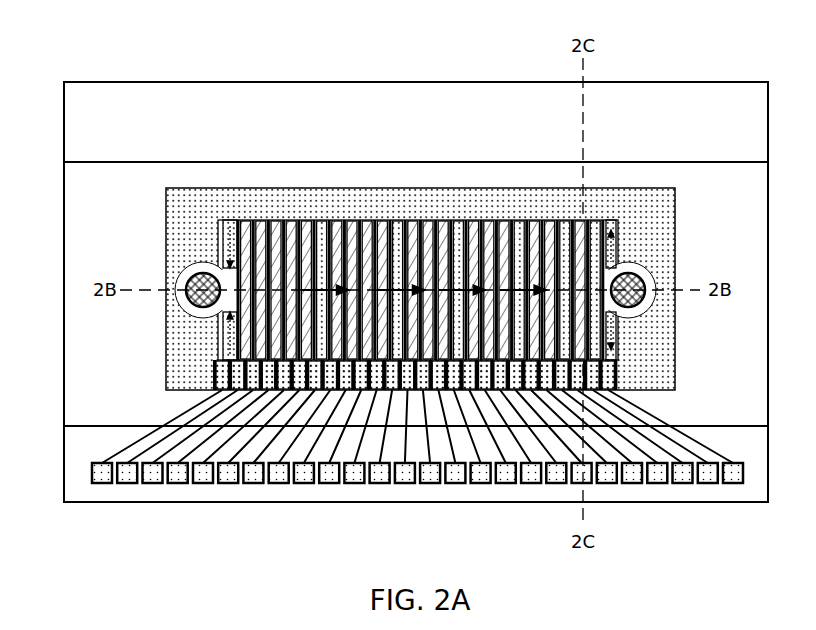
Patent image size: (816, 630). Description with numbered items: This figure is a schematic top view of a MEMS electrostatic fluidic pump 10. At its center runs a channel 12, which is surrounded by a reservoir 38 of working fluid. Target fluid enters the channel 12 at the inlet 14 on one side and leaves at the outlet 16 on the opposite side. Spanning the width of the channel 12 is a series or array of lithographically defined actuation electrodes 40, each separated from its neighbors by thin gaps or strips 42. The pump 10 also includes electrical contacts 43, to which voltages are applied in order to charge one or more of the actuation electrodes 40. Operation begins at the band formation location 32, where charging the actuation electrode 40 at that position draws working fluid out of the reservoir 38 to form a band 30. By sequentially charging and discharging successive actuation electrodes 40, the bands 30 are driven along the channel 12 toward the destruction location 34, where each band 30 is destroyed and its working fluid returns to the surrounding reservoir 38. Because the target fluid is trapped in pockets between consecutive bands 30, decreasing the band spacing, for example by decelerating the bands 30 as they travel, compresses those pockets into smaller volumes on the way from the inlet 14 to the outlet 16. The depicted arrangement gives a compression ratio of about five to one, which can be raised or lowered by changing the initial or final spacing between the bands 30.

The pump 10 is at (696, 41).
The channel 12 is at (245, 345).
The inlet 14 is at (194, 277).
The outlet 16 is at (655, 277).
The bands 30 is at (565, 222).
The band formation location 32 is at (230, 222).
The destruction location 34 is at (611, 222).
The reservoir 38 is at (188, 226).
The actuation electrodes 40 is at (277, 222).
The strips 42 is at (300, 222).
The electrical contacts 43 is at (302, 485).